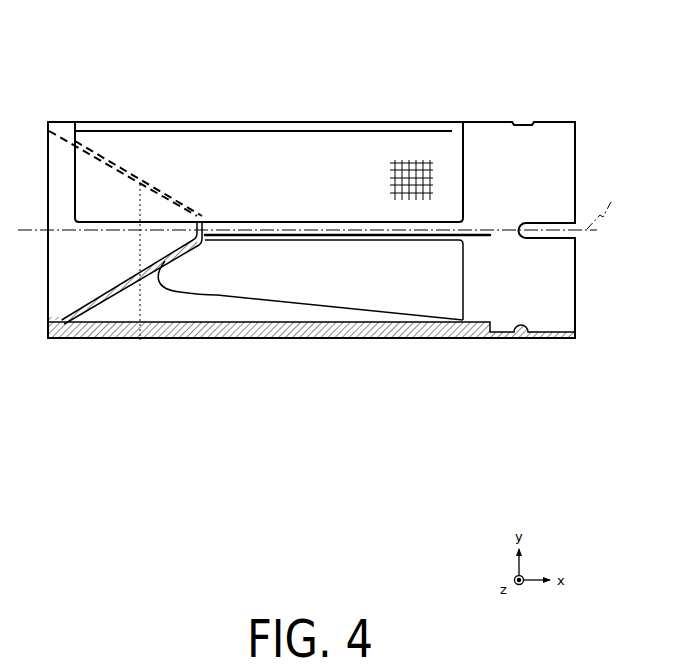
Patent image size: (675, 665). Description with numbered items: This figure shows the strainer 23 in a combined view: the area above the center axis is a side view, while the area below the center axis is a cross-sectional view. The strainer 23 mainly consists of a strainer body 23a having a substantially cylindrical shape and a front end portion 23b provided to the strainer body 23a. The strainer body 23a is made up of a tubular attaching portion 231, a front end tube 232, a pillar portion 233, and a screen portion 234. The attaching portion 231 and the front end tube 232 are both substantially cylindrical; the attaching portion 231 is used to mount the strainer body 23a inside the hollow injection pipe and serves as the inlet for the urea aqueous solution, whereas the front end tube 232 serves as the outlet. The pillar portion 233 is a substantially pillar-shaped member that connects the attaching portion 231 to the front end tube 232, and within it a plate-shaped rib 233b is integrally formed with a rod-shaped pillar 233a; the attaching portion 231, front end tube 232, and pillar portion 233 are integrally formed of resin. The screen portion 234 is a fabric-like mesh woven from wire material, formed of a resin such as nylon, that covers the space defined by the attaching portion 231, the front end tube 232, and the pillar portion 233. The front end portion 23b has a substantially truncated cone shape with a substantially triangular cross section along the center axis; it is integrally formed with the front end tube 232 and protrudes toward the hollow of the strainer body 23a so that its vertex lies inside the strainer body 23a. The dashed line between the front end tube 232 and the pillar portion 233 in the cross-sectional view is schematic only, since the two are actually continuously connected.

The strainer 23 is at (526, 46).
The strainer body 23a is at (208, 55).
The front end portion 23b is at (112, 292).
The attaching portion 231 is at (488, 128).
The front end tube 232 is at (61, 131).
The pillar portion 233 is at (382, 391).
The pillar 233a is at (257, 335).
The rib 233b is at (303, 312).
The screen portion 234 is at (285, 150).